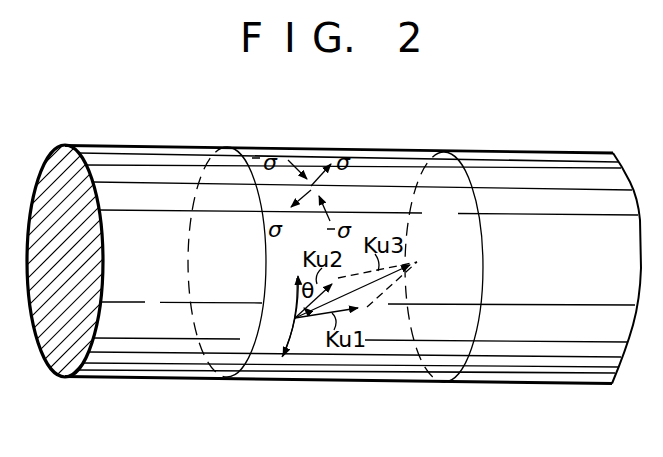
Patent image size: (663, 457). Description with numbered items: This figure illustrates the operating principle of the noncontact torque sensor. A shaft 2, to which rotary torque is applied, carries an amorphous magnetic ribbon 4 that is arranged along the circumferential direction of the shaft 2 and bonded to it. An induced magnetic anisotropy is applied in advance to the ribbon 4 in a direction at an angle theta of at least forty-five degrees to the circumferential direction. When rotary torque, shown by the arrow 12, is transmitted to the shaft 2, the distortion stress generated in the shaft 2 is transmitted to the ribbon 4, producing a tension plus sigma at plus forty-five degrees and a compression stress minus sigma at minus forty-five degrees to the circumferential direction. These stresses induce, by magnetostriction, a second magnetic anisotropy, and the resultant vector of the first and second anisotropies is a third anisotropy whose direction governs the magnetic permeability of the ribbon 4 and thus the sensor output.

The shaft 2 is at (558, 178).
The amorphous magnetic ribbon 4 is at (407, 172).
The arrow 12 is at (292, 327).